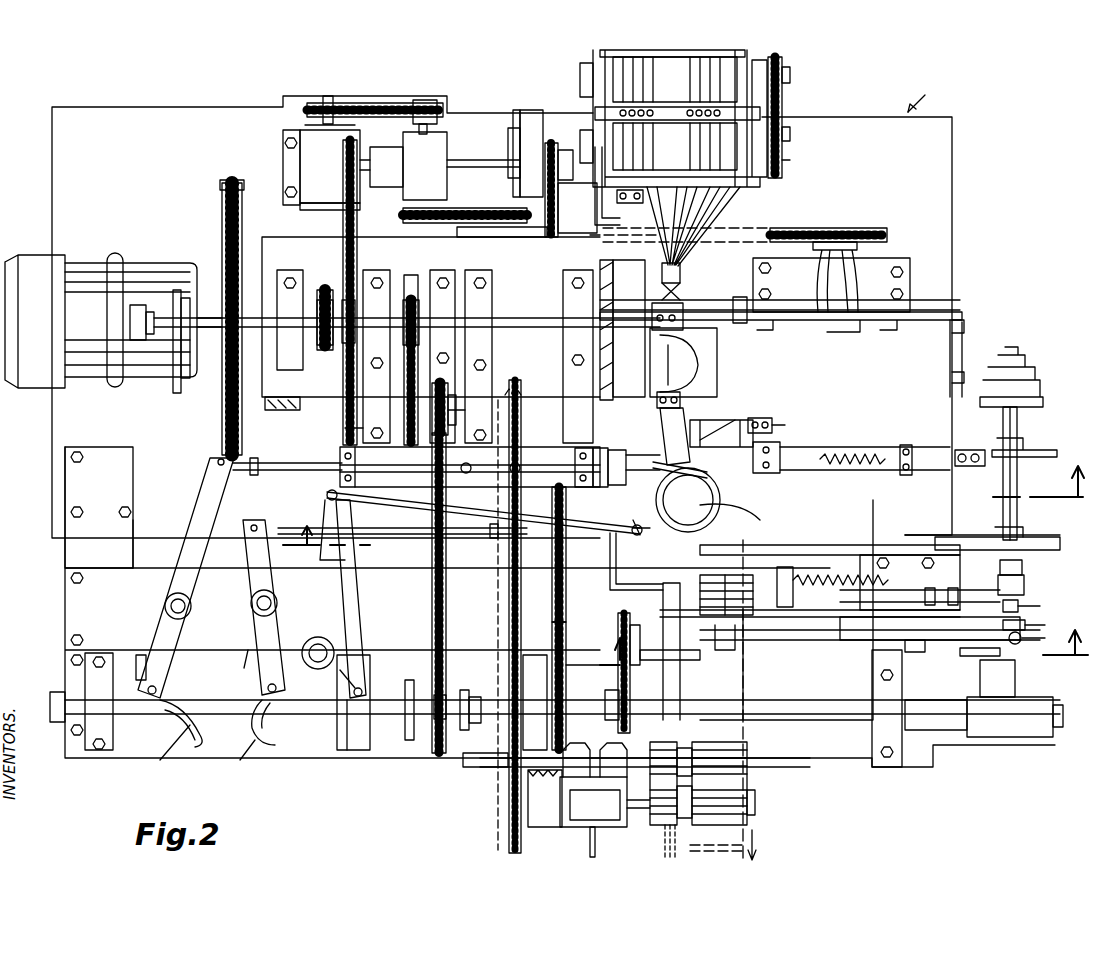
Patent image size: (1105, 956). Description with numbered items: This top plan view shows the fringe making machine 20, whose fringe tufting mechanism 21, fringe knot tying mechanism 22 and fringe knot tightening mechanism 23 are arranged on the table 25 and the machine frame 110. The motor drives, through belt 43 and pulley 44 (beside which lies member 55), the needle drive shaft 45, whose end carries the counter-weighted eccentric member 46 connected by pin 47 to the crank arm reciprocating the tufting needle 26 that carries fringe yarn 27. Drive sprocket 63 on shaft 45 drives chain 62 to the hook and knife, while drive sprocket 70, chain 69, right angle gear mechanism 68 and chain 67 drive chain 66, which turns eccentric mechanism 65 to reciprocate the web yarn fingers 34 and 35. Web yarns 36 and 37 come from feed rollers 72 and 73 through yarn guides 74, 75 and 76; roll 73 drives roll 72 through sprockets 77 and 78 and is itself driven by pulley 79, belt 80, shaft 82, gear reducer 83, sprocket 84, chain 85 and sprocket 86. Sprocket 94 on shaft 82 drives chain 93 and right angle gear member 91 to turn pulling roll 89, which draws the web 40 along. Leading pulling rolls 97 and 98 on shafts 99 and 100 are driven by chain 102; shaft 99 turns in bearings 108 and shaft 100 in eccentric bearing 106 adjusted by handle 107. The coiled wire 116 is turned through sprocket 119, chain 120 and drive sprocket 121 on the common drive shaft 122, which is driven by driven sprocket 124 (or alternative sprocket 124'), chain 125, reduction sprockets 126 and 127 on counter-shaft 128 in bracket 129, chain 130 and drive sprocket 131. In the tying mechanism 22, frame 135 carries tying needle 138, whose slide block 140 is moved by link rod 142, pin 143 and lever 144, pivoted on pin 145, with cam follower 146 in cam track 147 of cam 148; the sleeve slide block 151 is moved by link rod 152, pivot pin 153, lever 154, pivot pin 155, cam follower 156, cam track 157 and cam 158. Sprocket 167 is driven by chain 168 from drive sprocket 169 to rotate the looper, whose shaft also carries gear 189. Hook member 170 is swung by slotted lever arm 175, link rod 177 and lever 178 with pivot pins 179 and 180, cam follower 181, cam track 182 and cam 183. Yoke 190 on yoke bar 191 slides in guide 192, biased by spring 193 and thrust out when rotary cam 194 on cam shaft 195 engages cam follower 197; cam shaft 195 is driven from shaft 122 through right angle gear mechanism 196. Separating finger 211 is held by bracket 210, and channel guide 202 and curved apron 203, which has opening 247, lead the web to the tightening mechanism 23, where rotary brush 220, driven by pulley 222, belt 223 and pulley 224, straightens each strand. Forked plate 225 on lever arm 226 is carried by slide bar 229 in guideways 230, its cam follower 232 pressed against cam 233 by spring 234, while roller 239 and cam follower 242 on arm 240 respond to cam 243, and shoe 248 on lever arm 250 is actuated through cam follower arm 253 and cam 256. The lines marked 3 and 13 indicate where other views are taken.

The machine 20 is at (926, 97).
The frame plate 25 is at (917, 162).
The lower frame 110 is at (130, 590).
The motor 47 is at (46, 314).
The coupling 55 is at (178, 380).
The sprocket 43 is at (240, 198).
The chain 44 is at (222, 216).
The main shaft 45 is at (522, 316).
The sprocket 62 is at (322, 346).
The sprocket 63 is at (322, 290).
The chain 69 is at (343, 250).
The sprocket 70 is at (348, 344).
The sprocket 131 is at (417, 290).
The chain 130 is at (404, 372).
The sprocket 126 is at (455, 385).
The sprocket 128 is at (450, 405).
The hub 129 is at (470, 395).
The bracket 127 is at (363, 428).
The gear box 83 is at (340, 160).
The gear box 68 is at (432, 169).
The sprocket 84 is at (325, 98).
The chain 85 is at (398, 103).
The sprocket 86 is at (430, 105).
The shaft 82 is at (480, 153).
The chain 67 is at (470, 208).
The sprocket 79 is at (516, 110).
The sprocket 80 is at (532, 110).
The chain 94 is at (552, 143).
The sprocket 93 is at (577, 191).
The bearing 74 is at (582, 112).
The upper drum 72 is at (684, 79).
The lower drum 73 is at (684, 144).
The gear 77 is at (780, 60).
The gear 78 is at (783, 172).
The guide 75 is at (730, 190).
The strands 36 is at (660, 212).
The strand 37 is at (706, 212).
The guide block 76 is at (682, 275).
The tube 27 is at (645, 230).
The bar 21 is at (740, 243).
The chain 66 is at (810, 232).
The bracket 65 is at (872, 308).
The shaft 35 is at (728, 298).
The bracket 34 is at (737, 300).
The guide 26 is at (680, 305).
The block 46 is at (636, 278).
The housing 91 is at (700, 340).
The cam 89 is at (705, 356).
The link 116 is at (672, 386).
The bracket 190 is at (721, 435).
The block 22 is at (760, 425).
The arm 211 is at (722, 428).
The pin 210 is at (785, 425).
The block 191 is at (785, 450).
The rod 192 is at (890, 452).
The spring 193 is at (870, 455).
The pin 197 is at (970, 450).
The shaft 195 is at (1017, 424).
The collar 194 is at (1024, 460).
The bar 224 is at (1030, 537).
The plate 223 is at (955, 537).
The bar 135 is at (340, 448).
The roller 140 is at (466, 474).
The rod 142 is at (268, 462).
The pin 143 is at (216, 461).
The lever 144 is at (206, 484).
The pivot 145 is at (166, 606).
The pin 146 is at (157, 690).
The finger 147 is at (172, 753).
The finger 148 is at (171, 723).
The block 151 is at (540, 455).
The rod 167 is at (580, 450).
The rod 152 is at (302, 528).
The pin 153 is at (255, 524).
The lever 154 is at (254, 584).
The pivot 155 is at (252, 606).
The pin 156 is at (268, 690).
The finger 157 is at (256, 740).
The finger 158 is at (233, 649).
The rod 177 is at (390, 505).
The lever 178 is at (334, 583).
The link 179 is at (328, 494).
The pivot 180 is at (316, 636).
The pin 181 is at (340, 670).
The bracket 182 is at (360, 750).
The bracket 183 is at (345, 740).
The clevis 175 is at (638, 536).
The chain 189 is at (600, 512).
The chain 168 is at (566, 609).
The tube 202 is at (663, 578).
The cam 170 is at (712, 512).
The link 138 is at (708, 476).
The arm 203 is at (747, 509).
The bar 222 is at (760, 540).
The coil 220 is at (729, 583).
The block 229 is at (815, 600).
The spring 234 is at (835, 568).
The plate 230 is at (935, 575).
The rod 226 is at (920, 589).
The collar 232 is at (1022, 567).
The collar 233 is at (1026, 583).
The pin 239 is at (1032, 600).
The bar 242 is at (985, 622).
The pin 243 is at (1038, 621).
The roller 256 is at (1041, 641).
The rod 250 is at (812, 640).
The block 240 is at (915, 652).
The bar 253 is at (968, 656).
The bracket 248 is at (735, 645).
The rod 225 is at (680, 650).
The bar 247 is at (672, 664).
The cam assembly 23 is at (762, 676).
The shaft 122 is at (848, 716).
The bearing 196 is at (1012, 708).
The sprocket 124 is at (430, 739).
The sprocket 124' is at (413, 696).
The chain 125 is at (446, 606).
The chain 102 is at (509, 642).
The bar 99 is at (485, 750).
The chain 119 is at (618, 630).
The sprocket 120 is at (618, 646).
The shaft 169 is at (592, 672).
The sprocket 121 is at (606, 690).
The guide 108 is at (595, 752).
The box 106 is at (602, 812).
The pin 107 is at (590, 840).
The gear 97 is at (750, 750).
The gear 98 is at (750, 790).
The shaft 100 is at (640, 808).
The strand 40 is at (662, 848).
The section line 3 is at (681, 518).
The section line 13 is at (848, 700).